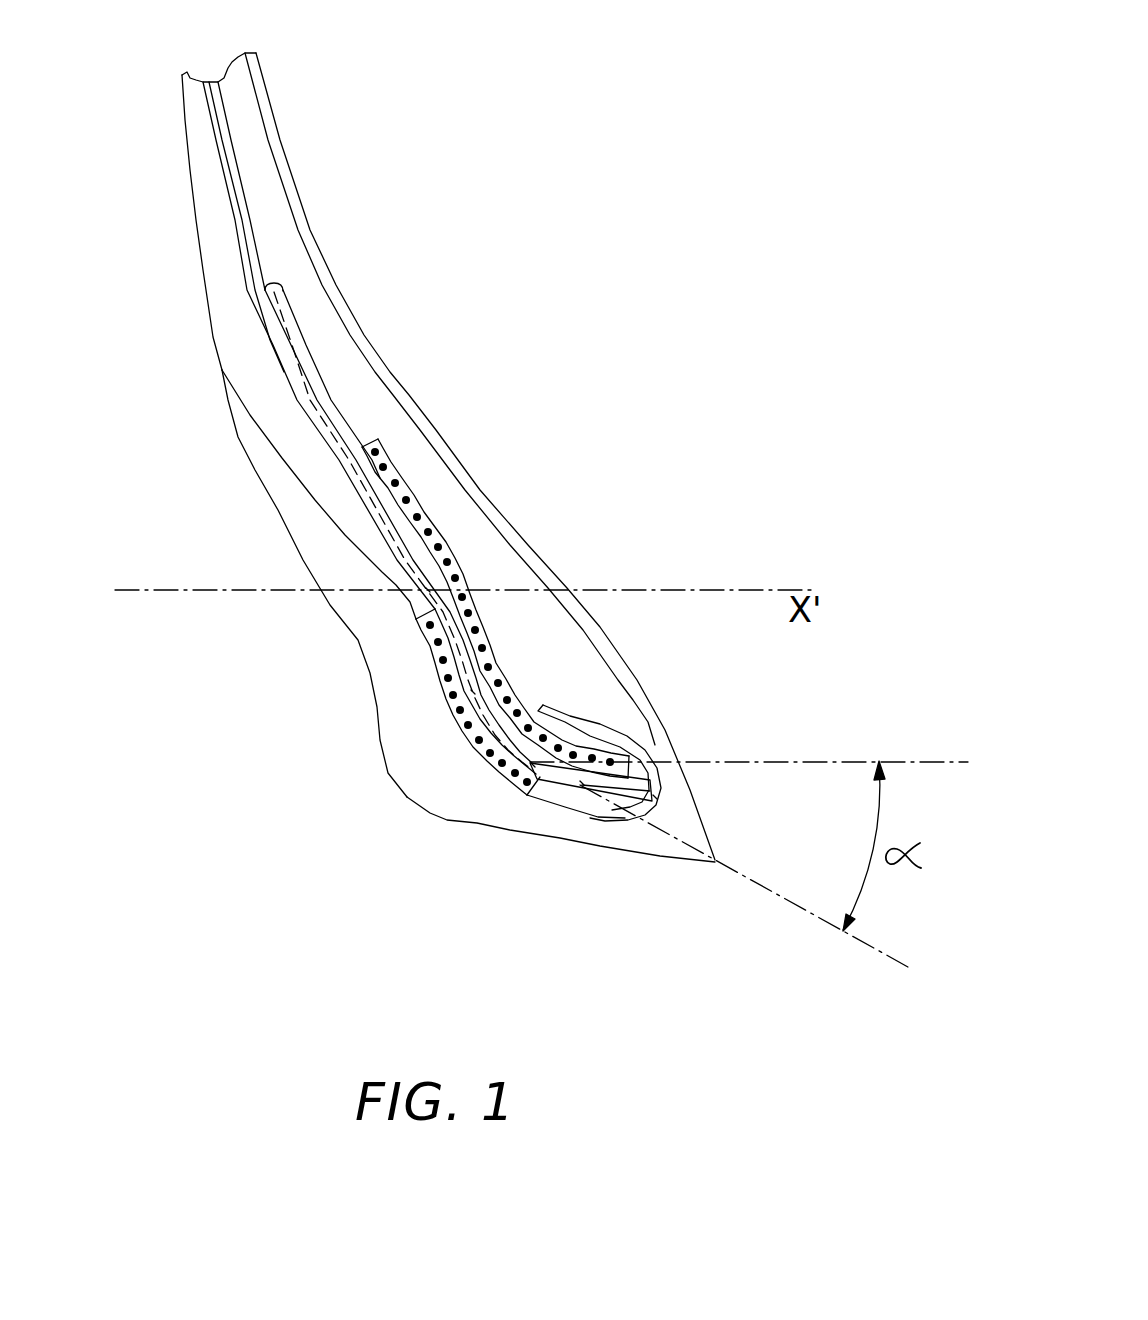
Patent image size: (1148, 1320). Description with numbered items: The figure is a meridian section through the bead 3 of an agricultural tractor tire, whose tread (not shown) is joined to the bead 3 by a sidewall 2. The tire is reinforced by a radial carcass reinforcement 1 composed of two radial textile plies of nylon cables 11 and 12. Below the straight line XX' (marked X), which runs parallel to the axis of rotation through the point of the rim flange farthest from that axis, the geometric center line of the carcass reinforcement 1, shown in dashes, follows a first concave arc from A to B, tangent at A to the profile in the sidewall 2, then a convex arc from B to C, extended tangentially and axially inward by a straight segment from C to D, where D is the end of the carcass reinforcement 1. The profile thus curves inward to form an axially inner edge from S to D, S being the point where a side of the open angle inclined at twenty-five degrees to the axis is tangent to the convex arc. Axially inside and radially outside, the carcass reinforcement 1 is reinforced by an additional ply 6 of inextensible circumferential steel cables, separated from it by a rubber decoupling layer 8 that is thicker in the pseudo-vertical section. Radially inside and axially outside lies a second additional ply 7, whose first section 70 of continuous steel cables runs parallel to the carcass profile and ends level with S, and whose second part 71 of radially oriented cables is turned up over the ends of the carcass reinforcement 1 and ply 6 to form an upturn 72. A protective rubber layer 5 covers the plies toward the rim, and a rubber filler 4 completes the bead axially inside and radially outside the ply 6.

The radial carcass reinforcement 1 is at (222, 137).
The radial textile ply of nylon cables 11 is at (242, 220).
The radial textile ply of nylon cables 12 is at (222, 180).
The sidewall 2 is at (218, 292).
The bead 3 is at (565, 640).
The rubber filler 4 is at (460, 498).
The protective rubber layer 5 is at (525, 822).
The additional ply 6 is at (383, 447).
The second additional ply 7 is at (462, 732).
The first section of second additional ply 70 is at (433, 632).
The second part of second additional ply 71 is at (600, 810).
The upturn 72 is at (587, 738).
The rubber decoupling layer 8 is at (297, 335).
The point A is at (428, 590).
The point B is at (473, 692).
The point C is at (582, 783).
The point D is at (655, 797).
The point S is at (533, 765).
The straight line XX' X is at (465, 611).